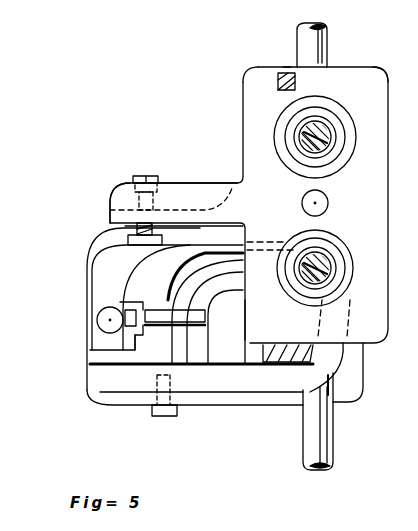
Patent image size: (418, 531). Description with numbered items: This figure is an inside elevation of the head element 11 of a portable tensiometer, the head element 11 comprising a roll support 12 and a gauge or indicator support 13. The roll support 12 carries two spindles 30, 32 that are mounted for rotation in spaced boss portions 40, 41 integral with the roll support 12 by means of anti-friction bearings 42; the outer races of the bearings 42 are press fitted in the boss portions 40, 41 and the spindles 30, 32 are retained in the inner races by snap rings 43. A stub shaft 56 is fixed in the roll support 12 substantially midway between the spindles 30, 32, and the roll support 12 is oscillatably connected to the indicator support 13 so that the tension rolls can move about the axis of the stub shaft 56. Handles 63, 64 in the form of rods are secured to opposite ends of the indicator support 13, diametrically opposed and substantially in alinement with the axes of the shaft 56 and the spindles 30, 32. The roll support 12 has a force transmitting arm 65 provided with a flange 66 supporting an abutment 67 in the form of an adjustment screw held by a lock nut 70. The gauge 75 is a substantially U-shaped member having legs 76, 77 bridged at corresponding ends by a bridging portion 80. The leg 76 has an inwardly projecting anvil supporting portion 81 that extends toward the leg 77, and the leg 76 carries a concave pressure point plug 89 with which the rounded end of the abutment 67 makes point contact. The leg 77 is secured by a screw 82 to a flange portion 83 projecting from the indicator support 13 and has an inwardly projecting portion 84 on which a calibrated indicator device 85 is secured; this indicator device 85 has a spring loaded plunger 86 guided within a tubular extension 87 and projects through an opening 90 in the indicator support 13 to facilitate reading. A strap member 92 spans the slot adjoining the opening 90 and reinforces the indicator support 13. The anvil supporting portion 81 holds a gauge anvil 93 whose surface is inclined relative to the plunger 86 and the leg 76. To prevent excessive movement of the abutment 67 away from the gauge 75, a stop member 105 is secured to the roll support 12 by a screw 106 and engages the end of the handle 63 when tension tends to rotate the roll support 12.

The head element 11 is at (383, 73).
The roll support 12 is at (382, 106).
The indicator support 13 is at (238, 101).
The spindle 30 is at (332, 147).
The spindle 32 is at (327, 269).
The boss portion 40 is at (283, 157).
The boss portion 41 is at (351, 283).
The anti-friction bearings 42 is at (287, 126).
The snap rings 43 is at (327, 125).
The stub shaft 56 is at (330, 205).
The handle 63 is at (322, 34).
The handle 64 is at (311, 430).
The force transmitting arm 65 is at (203, 183).
The flange 66 is at (112, 203).
The abutment 67 is at (137, 177).
The lock nut 70 is at (125, 187).
The gauge 75 is at (79, 280).
The leg 76 is at (205, 248).
The leg 77 is at (223, 365).
The bridging portion 80 is at (355, 314).
The anvil supporting portion 81 is at (90, 297).
The screw 82 is at (157, 417).
The flange portion 83 is at (201, 405).
The inwardly projecting portion 84 is at (241, 331).
The indicator device 85 is at (231, 282).
The spring loaded plunger 86 is at (133, 303).
The tubular extension 87 is at (176, 315).
The pressure point plug 89 is at (130, 246).
The opening 90 is at (181, 284).
The strap member 92 is at (142, 335).
The gauge anvil 93 is at (102, 318).
The stop member 105 is at (291, 63).
The screw 106 is at (296, 80).